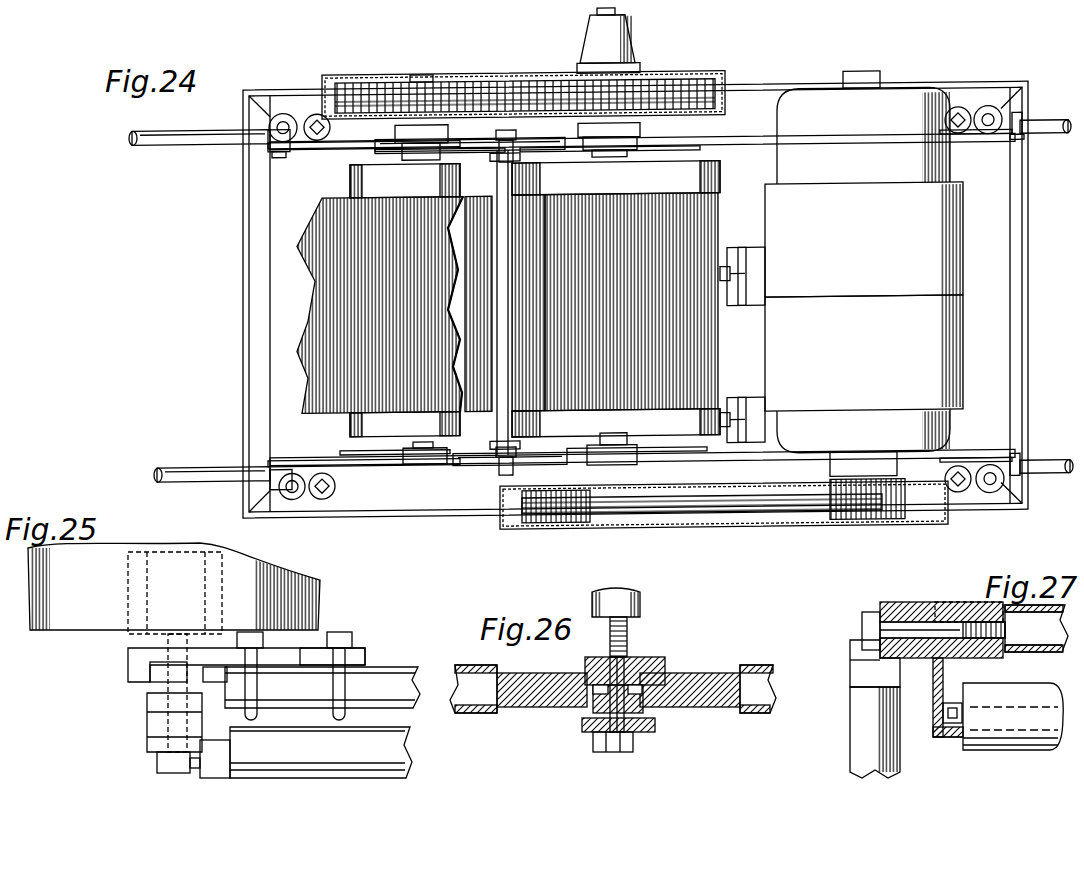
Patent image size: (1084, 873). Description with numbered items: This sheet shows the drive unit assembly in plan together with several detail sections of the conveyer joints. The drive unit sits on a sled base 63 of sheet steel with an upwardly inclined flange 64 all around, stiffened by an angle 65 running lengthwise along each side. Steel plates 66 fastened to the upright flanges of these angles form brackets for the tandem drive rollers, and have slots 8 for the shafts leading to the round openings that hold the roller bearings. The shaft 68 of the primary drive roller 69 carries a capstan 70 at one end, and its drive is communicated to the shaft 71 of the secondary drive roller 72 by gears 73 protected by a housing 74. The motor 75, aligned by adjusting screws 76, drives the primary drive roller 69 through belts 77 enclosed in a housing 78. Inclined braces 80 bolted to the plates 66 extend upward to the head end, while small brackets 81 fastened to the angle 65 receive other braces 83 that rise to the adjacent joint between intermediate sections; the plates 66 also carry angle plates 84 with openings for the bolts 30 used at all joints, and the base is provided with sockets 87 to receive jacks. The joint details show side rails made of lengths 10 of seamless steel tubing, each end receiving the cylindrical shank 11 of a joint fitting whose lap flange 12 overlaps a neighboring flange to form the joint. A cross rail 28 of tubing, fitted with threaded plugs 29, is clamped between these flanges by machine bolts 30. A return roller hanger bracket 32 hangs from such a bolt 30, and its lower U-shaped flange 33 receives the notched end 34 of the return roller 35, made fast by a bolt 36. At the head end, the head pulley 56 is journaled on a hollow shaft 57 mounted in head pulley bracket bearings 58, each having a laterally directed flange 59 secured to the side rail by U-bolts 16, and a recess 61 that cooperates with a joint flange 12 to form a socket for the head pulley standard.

In FIG. 24, the slot 8 is at (385, 153).
In FIG. 24, the length of seamless steel tubing 10 is at (445, 154).
In FIG. 25, the length of seamless steel tubing 10 is at (385, 670).
In FIG. 26, the length of seamless steel tubing 10 is at (463, 713).
In FIG. 27, the length of seamless steel tubing 10 is at (958, 606).
In FIG. 26, the cylindrical shank 11 is at (718, 672).
In FIG. 24, the lap flange 12 is at (275, 150).
In FIG. 25, the lap flange 12 is at (150, 714).
In FIG. 26, the lap flange 12 is at (650, 666).
In FIG. 27, the lap flange 12 is at (905, 605).
In FIG. 25, the U-bolt 16 is at (333, 694).
In FIG. 24, the cross rail 28 is at (502, 425).
In FIG. 26, the cross rail 28 is at (640, 598).
In FIG. 27, the cross rail 28 is at (1050, 652).
In FIG. 26, the threaded plug 29 is at (628, 632).
In FIG. 27, the threaded plug 29 is at (1000, 656).
In FIG. 24, the machine bolt 30 is at (500, 132).
In FIG. 25, the machine bolt 30 is at (172, 684).
In FIG. 26, the machine bolt 30 is at (617, 728).
In FIG. 27, the machine bolt 30 is at (870, 630).
In FIG. 27, the return roller hanger bracket 32 is at (945, 674).
In FIG. 27, the U-shaped flange 33 is at (940, 740).
In FIG. 27, the notched end 34 is at (950, 738).
In FIG. 27, the return roller 35 is at (1012, 752).
In FIG. 27, the bolt 36 is at (950, 712).
In FIG. 25, the head pulley 56 is at (75, 622).
In FIG. 25, the hollow shaft 57 is at (142, 546).
In FIG. 25, the head pulley bracket bearing 58 is at (128, 652).
In FIG. 25, the laterally directed flange 59 is at (360, 652).
In FIG. 25, the recess 61 is at (160, 676).
In FIG. 24, the sled base 63 is at (270, 383).
In FIG. 24, the upwardly inclined flange 64 is at (800, 92).
In FIG. 24, the angle 65 is at (752, 140).
In FIG. 24, the steel plate 66 is at (312, 152).
In FIG. 24, the shaft 68 is at (615, 440).
In FIG. 24, the primary drive roller 69 is at (718, 184).
In FIG. 24, the capstan 70 is at (630, 50).
In FIG. 24, the shaft 71 is at (427, 77).
In FIG. 24, the secondary drive roller 72 is at (352, 182).
In FIG. 24, the gears 73 is at (555, 95).
In FIG. 24, the housing 74 is at (680, 78).
In FIG. 24, the motor 75 is at (864, 273).
In FIG. 24, the adjusting screw 76 is at (748, 272).
In FIG. 24, the belts 77 is at (790, 518).
In FIG. 24, the housing 78 is at (738, 533).
In FIG. 24, the inclined brace 80 is at (150, 146).
In FIG. 25, the inclined brace 80 is at (306, 778).
In FIG. 24, the small bracket 81 is at (975, 150).
In FIG. 24, the brace 83 is at (1047, 142).
In FIG. 27, the brace 83 is at (850, 748).
In FIG. 24, the angle plate 84 is at (488, 130).
In FIG. 26, the angle plate 84 is at (650, 735).
In FIG. 24, the socket 87 is at (283, 114).